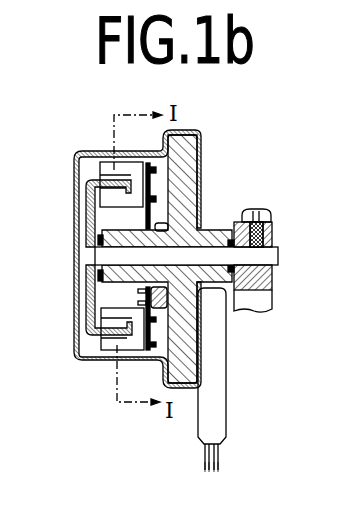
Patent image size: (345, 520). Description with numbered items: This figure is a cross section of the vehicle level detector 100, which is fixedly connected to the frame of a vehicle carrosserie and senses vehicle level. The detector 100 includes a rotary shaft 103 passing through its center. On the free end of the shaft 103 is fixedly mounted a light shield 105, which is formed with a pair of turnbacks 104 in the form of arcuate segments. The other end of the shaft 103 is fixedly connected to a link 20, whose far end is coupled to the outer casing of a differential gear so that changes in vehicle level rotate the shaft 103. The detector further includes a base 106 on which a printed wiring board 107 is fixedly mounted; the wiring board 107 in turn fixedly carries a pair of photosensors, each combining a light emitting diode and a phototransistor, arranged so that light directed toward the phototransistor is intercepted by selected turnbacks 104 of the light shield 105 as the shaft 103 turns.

The vehicle level detector 100 is at (73, 182).
The rotary shaft 103 is at (279, 255).
The turnbacks 104 is at (121, 178).
The light shield 105 is at (88, 219).
The base 106 is at (183, 193).
The printed wiring board 107 is at (150, 178).
The link 20 is at (273, 275).